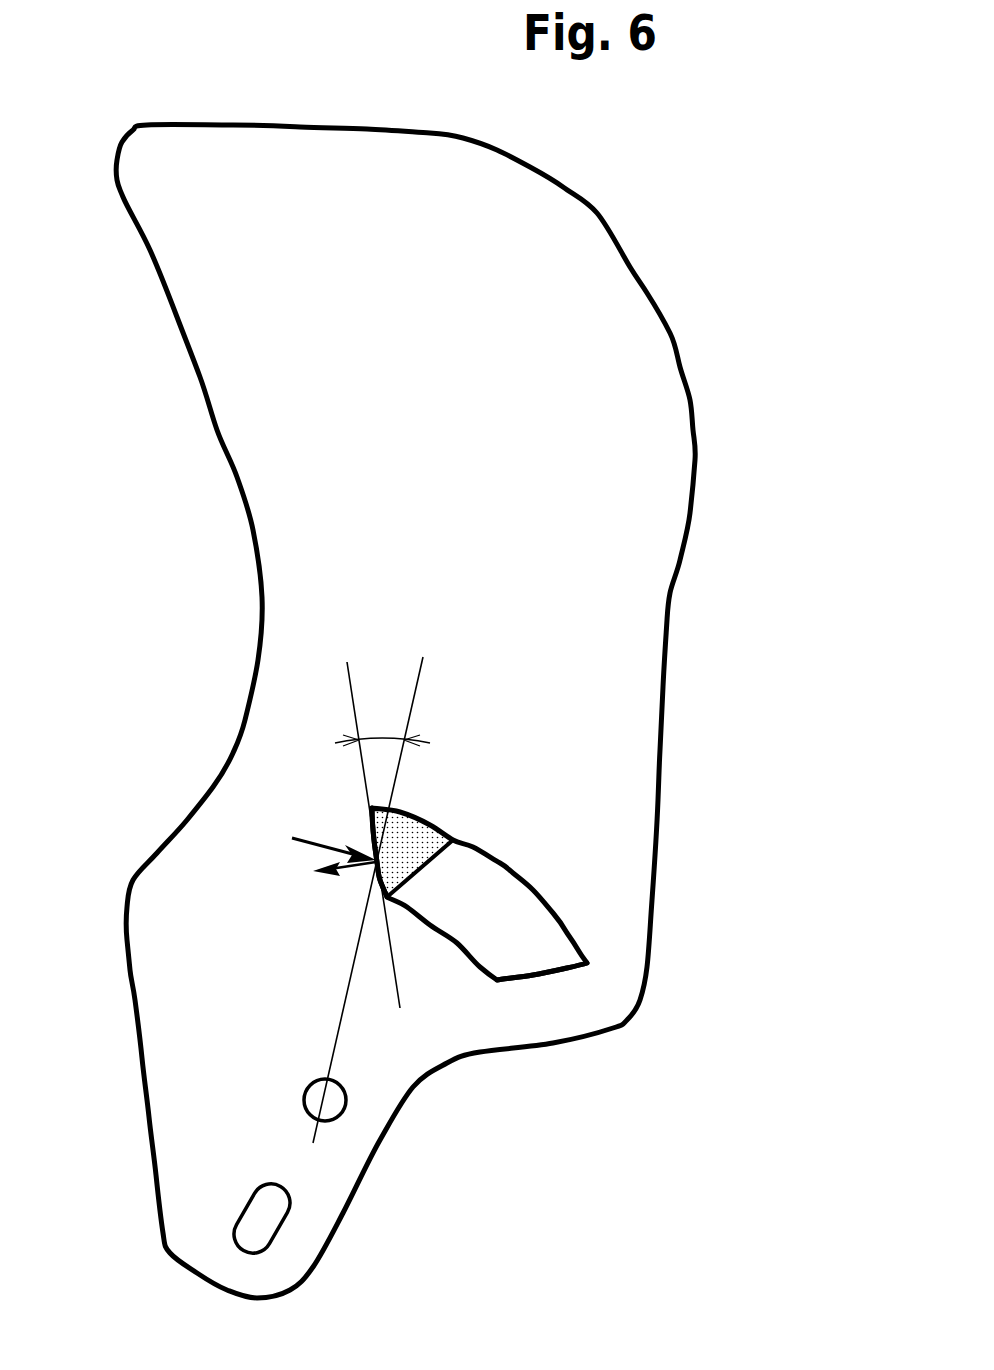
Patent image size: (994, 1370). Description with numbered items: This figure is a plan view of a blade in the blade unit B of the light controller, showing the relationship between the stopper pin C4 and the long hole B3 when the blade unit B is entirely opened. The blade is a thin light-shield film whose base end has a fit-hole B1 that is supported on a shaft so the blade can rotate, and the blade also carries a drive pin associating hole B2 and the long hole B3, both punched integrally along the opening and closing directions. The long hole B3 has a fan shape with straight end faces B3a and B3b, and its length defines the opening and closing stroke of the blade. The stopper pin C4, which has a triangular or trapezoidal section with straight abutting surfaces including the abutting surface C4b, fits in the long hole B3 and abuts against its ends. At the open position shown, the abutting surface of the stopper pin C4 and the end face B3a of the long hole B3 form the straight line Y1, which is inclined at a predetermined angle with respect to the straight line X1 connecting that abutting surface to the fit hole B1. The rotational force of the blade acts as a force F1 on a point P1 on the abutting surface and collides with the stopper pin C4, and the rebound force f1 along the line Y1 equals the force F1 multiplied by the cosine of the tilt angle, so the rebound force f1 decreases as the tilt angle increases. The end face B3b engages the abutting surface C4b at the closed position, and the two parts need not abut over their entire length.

The blade unit B is at (233, 472).
The fit-hole B1 is at (313, 1095).
The drive pin associating hole B2 is at (258, 1217).
The long hole B3 is at (508, 913).
The abutting surface of the long hole B3a is at (371, 806).
The abutting surface of the long hole B3b is at (530, 973).
The stopper pin C4 is at (418, 833).
The abutting surface of the stopper pin C4b is at (437, 870).
The point on the abutting surface P1 is at (378, 860).
The force F1 is at (319, 829).
The rebound force f1 is at (319, 883).
The straight line X1- X1 is at (367, 903).
The straight line Y1- Y1 is at (371, 838).